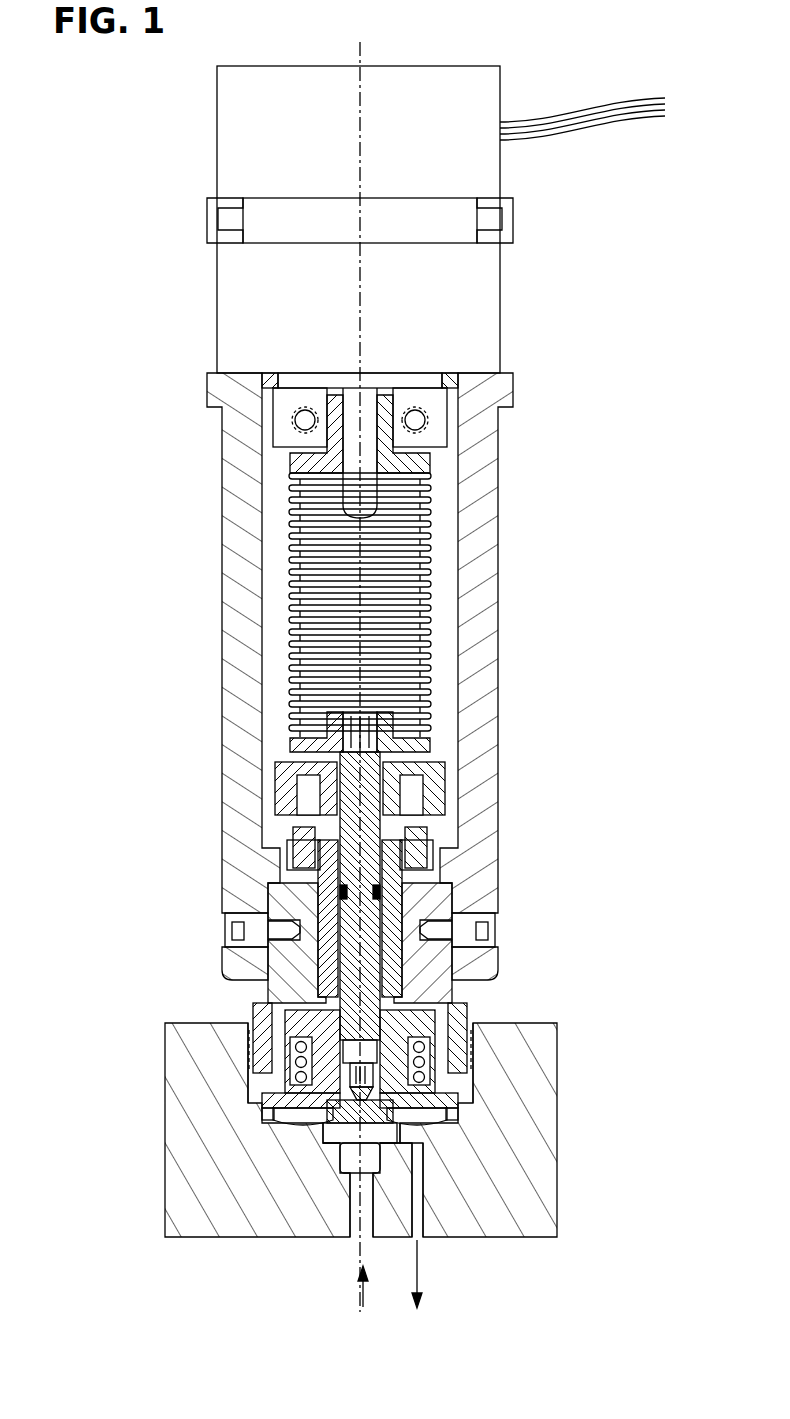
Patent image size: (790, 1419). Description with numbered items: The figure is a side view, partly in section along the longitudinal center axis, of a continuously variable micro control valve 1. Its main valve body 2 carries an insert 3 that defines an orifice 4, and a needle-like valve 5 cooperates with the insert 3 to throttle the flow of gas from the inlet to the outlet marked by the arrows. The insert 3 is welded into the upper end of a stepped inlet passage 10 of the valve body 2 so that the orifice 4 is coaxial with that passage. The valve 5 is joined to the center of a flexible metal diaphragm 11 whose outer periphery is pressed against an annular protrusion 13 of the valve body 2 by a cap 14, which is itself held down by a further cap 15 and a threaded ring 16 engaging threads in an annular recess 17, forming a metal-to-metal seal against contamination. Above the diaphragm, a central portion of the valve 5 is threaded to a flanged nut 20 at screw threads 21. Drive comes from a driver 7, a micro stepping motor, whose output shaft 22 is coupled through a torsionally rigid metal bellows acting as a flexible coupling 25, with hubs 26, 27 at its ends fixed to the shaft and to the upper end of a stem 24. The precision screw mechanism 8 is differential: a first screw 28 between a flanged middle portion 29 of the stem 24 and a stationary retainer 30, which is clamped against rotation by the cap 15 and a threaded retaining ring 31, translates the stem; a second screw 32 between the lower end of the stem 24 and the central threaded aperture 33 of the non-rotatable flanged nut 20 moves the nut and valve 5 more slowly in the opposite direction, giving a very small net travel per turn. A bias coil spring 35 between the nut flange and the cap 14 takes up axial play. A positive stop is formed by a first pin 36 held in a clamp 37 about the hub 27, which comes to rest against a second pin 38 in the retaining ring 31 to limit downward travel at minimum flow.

The micro control valve 1 is at (361, 676).
The main valve body 2 is at (520, 1210).
The insert 3 is at (345, 1150).
The orifice 4 is at (313, 1232).
The valve 5 is at (425, 1145).
The driver 7 is at (478, 300).
The precision screw mechanism 8 is at (532, 748).
The inlet passage 10 is at (357, 1232).
The flexible metal diaphragm 11 is at (330, 1135).
The annular protrusion 13 is at (400, 1128).
The cap 14 is at (466, 1115).
The cap 15 is at (473, 1090).
The threaded ring 16 is at (462, 1055).
The annular recess 17 is at (268, 1060).
The flanged nut 20 is at (300, 1085).
The screw threads 21 is at (473, 1023).
The output shaft 22 is at (372, 470).
The stem 24 is at (343, 750).
The flexible coupling 25 is at (290, 600).
The hub 26 is at (290, 460).
The hub 27 is at (295, 745).
The first screw 28 is at (318, 885).
The flanged middle portion 29 is at (300, 985).
The stationary retainer 30 is at (226, 930).
The threaded retaining ring 31 is at (293, 850).
The second screw 32 is at (257, 1005).
The central threaded aperture 33 is at (330, 1112).
The bias coil spring 35 is at (250, 1050).
The first pin 36 is at (297, 790).
The clamp 37 is at (277, 778).
The second pin 38 is at (383, 835).